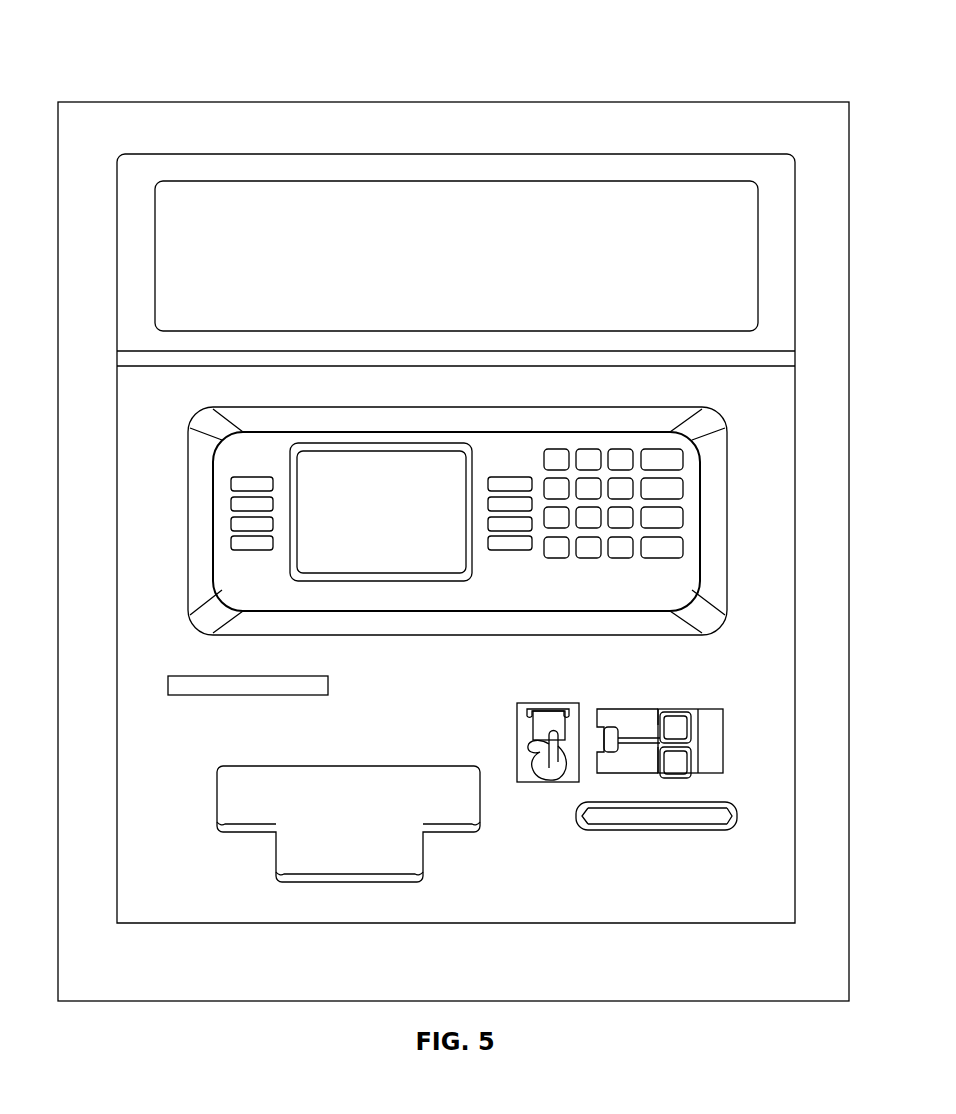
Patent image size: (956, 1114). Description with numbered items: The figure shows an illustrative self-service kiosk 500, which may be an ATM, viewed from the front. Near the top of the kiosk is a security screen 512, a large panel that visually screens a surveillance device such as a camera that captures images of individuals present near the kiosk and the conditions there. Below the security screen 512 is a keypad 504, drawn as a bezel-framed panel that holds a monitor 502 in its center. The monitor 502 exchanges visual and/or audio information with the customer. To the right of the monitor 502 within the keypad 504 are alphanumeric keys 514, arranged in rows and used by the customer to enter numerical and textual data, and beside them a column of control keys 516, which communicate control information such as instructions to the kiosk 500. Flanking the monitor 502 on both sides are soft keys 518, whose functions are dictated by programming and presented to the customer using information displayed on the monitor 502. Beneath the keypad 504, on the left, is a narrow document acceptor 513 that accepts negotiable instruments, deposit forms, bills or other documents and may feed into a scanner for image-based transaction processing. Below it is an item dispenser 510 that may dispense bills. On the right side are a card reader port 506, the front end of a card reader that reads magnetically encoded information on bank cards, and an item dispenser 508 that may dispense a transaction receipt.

The self-service kiosk 500 is at (126, 55).
The monitor 502 is at (408, 445).
The keypad 504 is at (503, 592).
The card reader port 506 is at (707, 709).
The item dispenser 508 is at (722, 802).
The item dispenser 510 is at (243, 765).
The security screen 512 is at (680, 180).
The document acceptor 513 is at (232, 676).
The alphanumeric keys 514 is at (557, 563).
The control keys 516 is at (667, 442).
The soft keys 518 is at (257, 465).